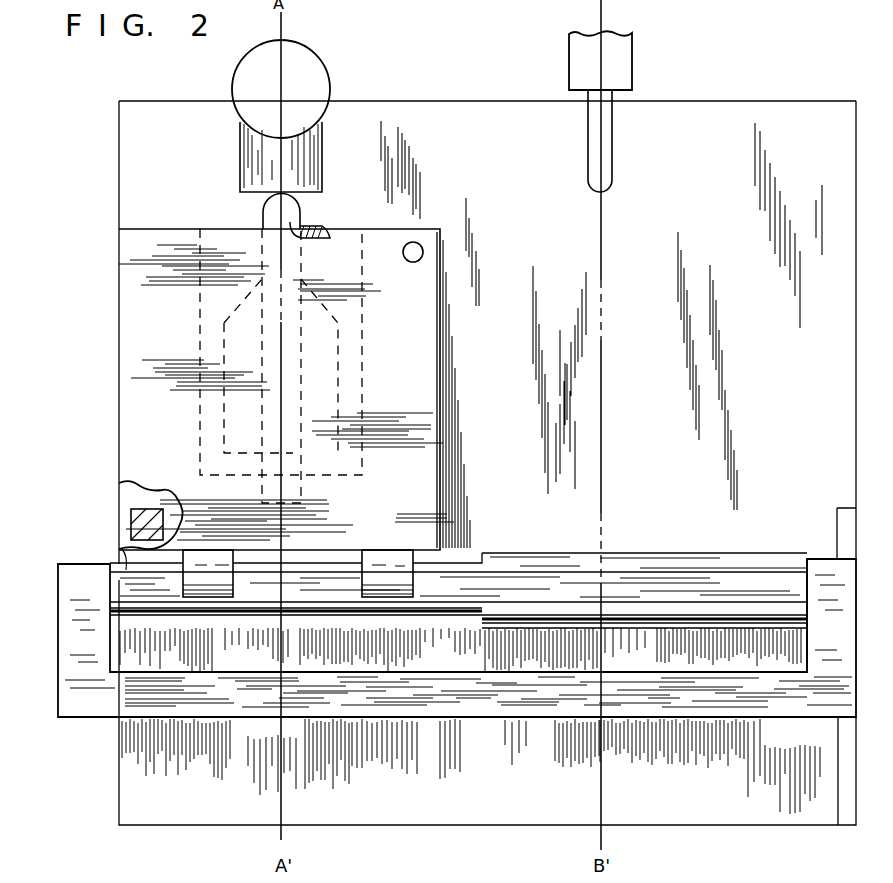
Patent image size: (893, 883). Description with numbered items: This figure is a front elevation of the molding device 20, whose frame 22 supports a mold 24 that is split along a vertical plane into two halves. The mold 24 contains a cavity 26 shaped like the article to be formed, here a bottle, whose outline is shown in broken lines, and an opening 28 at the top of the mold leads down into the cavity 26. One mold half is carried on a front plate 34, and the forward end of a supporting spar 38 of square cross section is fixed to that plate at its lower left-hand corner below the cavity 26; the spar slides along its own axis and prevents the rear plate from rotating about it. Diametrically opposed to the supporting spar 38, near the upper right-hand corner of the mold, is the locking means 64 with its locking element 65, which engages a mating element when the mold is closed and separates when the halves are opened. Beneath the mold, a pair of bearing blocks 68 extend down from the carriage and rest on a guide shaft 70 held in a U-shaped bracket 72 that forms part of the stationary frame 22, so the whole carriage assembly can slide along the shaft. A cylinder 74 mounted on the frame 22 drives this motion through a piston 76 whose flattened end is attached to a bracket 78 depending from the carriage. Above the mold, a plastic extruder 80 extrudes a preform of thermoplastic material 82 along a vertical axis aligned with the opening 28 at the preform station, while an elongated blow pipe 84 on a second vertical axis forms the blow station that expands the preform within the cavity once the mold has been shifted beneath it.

The molding device 20 is at (118, 96).
The frame 22 is at (160, 818).
The mold 24 is at (112, 500).
The cavity 26 is at (223, 323).
The opening 28 is at (293, 226).
The front plate 34 is at (121, 383).
The supporting spar 38 is at (131, 522).
The locking means 64 is at (452, 248).
The locking element 65 is at (419, 245).
The bearing blocks 68 is at (360, 586).
The guide shaft 70 is at (569, 575).
The U-shaped bracket 72 is at (65, 655).
The cylinder 74 is at (746, 560).
The piston 76 is at (460, 563).
The bracket 78 is at (138, 557).
The plastic extruder 80 is at (243, 147).
The preform of thermoplastic material 82 is at (268, 207).
The blow pipe 84 is at (612, 136).